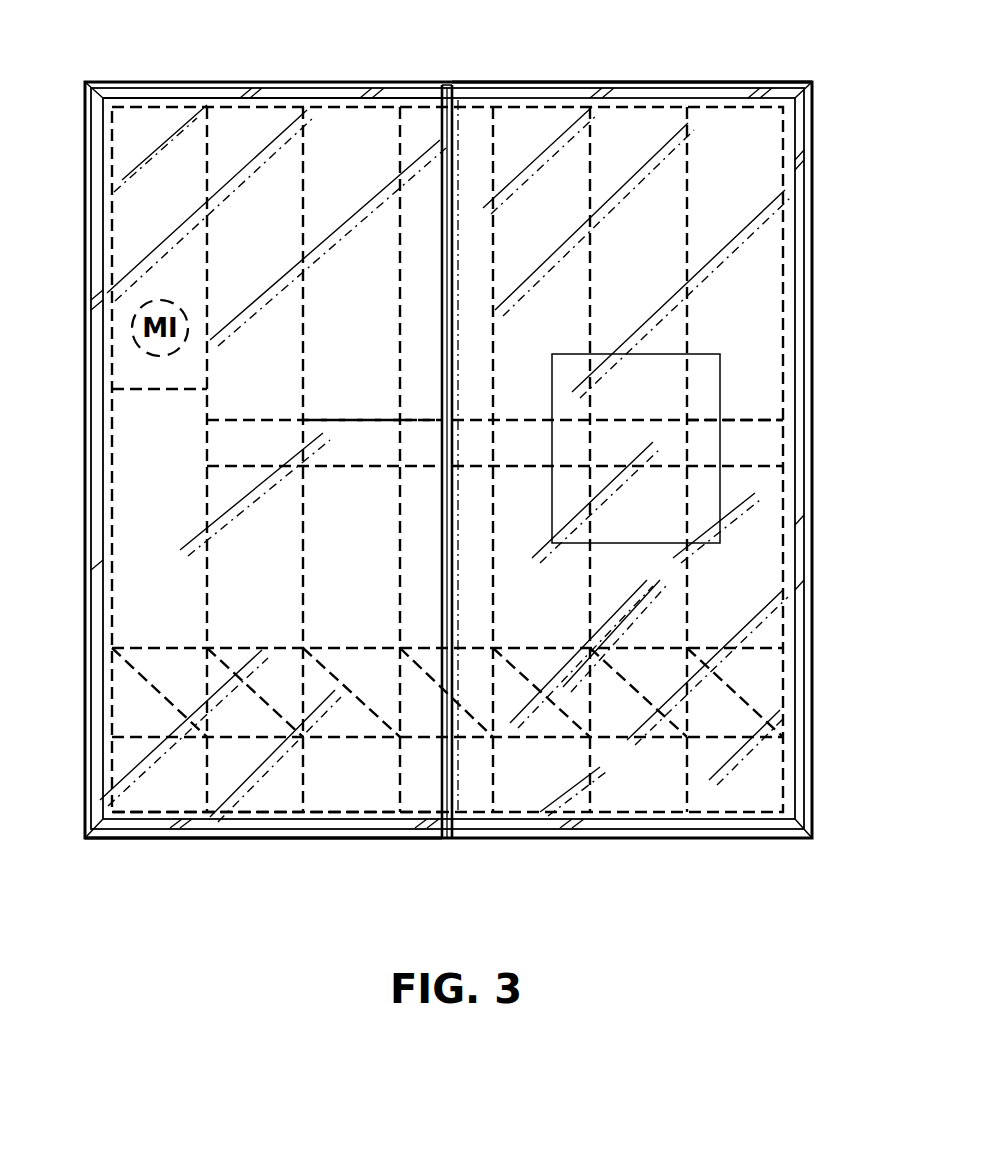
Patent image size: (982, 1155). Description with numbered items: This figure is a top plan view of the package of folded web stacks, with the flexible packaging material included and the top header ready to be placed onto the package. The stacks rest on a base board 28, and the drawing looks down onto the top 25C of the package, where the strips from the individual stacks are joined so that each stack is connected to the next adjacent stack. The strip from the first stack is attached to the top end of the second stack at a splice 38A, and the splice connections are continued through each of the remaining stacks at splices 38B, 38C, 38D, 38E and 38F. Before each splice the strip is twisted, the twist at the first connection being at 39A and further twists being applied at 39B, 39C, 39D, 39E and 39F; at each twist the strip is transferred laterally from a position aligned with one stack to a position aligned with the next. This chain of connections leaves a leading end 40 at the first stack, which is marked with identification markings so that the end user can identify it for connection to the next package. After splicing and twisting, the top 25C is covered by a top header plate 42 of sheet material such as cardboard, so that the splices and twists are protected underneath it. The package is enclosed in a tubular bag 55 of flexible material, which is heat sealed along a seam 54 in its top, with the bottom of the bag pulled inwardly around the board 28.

The top of the stack 25C is at (373, 822).
The base board 28 is at (238, 840).
The splice 38A is at (221, 446).
The splice 38B is at (356, 434).
The splice 38C is at (432, 429).
The splice 38D is at (523, 433).
The splice 38E is at (643, 430).
The splice 38F is at (754, 431).
The twist 39A is at (168, 652).
The twist 39B is at (268, 657).
The twist 39C is at (378, 659).
The twist 39D is at (474, 659).
The twist 39E is at (620, 717).
The twist 39F is at (730, 702).
The leading end 40 is at (149, 397).
The top header plate 42 is at (270, 91).
The seam 54 is at (443, 119).
The bag 55 is at (618, 74).